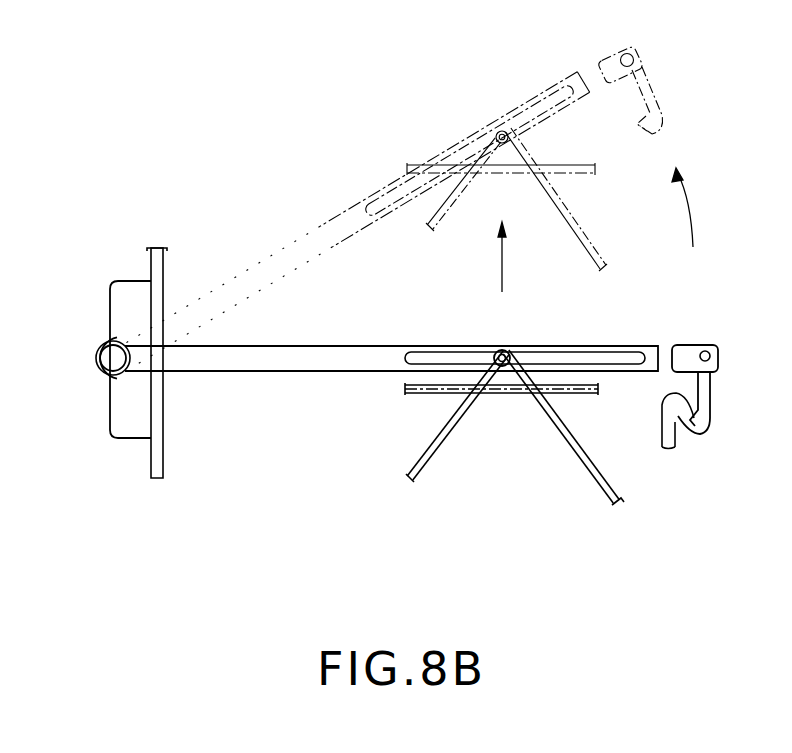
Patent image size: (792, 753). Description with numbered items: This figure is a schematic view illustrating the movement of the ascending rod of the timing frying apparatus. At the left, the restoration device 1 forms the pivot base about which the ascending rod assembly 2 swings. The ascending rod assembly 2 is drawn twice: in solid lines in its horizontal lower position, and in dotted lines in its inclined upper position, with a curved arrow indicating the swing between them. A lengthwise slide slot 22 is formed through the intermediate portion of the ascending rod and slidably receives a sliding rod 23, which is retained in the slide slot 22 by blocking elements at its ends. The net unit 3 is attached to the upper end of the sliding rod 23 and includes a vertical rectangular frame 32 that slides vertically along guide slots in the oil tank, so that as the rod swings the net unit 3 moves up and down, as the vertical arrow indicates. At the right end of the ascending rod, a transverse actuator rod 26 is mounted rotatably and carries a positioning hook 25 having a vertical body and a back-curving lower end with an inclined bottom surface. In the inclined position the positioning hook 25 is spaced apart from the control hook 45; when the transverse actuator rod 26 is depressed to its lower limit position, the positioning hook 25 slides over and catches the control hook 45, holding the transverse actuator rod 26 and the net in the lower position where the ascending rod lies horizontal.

The restoration device 1 is at (121, 246).
The ascending rod assembly 2 is at (592, 329).
The net unit 3 is at (431, 492).
The lengthwise slide slot 22 is at (438, 357).
The sliding rod 23 is at (512, 348).
The vertical rectangular frame 32 is at (409, 395).
The positioning hook 25 is at (712, 418).
The transverse actuator rod 26 is at (711, 356).
The control hook 45 is at (670, 449).